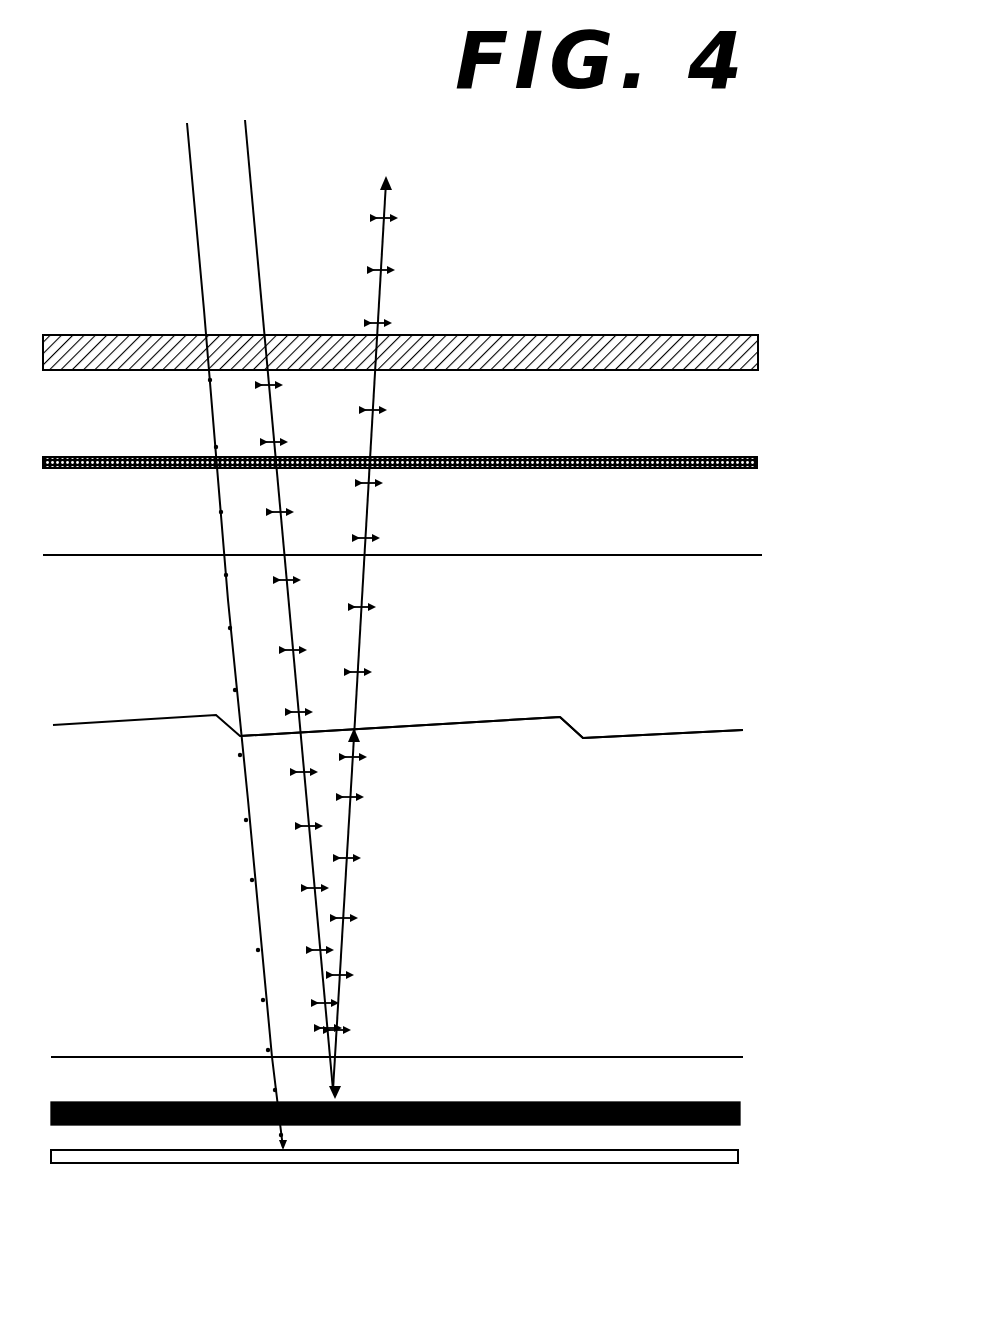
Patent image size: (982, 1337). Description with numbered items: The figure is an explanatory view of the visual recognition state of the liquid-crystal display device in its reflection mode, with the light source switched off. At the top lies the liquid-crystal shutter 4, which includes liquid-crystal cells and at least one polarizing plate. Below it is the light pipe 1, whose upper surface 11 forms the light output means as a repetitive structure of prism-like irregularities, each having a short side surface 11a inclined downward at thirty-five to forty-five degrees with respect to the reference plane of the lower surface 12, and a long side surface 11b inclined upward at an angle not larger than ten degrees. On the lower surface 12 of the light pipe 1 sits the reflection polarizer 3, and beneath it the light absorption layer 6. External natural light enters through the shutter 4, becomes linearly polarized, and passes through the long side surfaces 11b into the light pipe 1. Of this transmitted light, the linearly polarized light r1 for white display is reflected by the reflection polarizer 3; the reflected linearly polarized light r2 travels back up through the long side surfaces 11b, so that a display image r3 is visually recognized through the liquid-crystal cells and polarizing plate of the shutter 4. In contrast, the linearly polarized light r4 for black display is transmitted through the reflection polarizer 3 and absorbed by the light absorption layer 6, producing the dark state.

The light pipe 1 is at (627, 873).
The reflection polarizer 3 is at (740, 1110).
The liquid-crystal shutter 4 is at (783, 325).
The light absorption layer 6 is at (740, 1163).
The upper surface 11 is at (196, 706).
The short side surface 11a is at (576, 728).
The long side surface 11b is at (496, 717).
The lower surface 12 is at (222, 1058).
The linearly polarized light for white display r1 is at (312, 868).
The reflected linearly polarized light r2 is at (350, 832).
The display image light r3 is at (390, 434).
The linearly polarized light for black display r4 is at (263, 961).